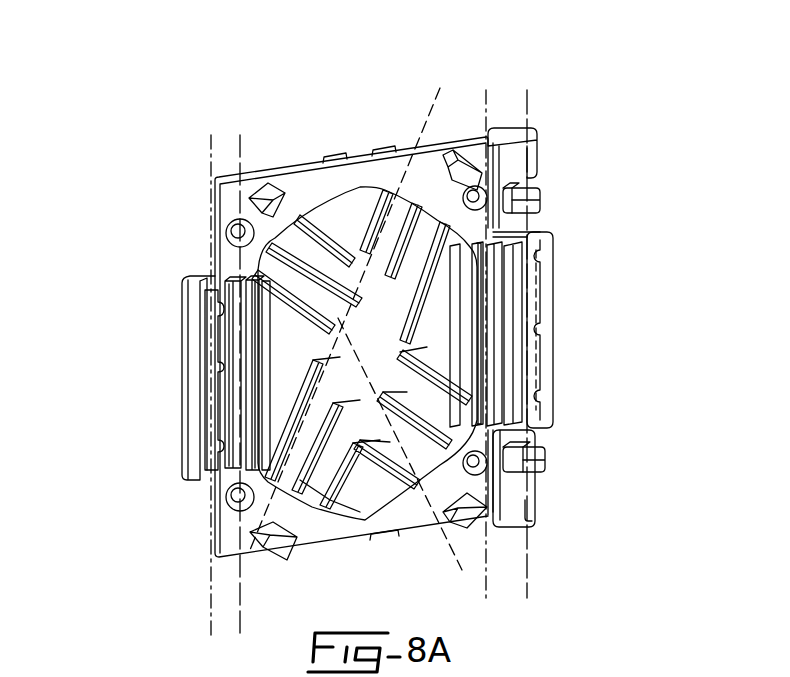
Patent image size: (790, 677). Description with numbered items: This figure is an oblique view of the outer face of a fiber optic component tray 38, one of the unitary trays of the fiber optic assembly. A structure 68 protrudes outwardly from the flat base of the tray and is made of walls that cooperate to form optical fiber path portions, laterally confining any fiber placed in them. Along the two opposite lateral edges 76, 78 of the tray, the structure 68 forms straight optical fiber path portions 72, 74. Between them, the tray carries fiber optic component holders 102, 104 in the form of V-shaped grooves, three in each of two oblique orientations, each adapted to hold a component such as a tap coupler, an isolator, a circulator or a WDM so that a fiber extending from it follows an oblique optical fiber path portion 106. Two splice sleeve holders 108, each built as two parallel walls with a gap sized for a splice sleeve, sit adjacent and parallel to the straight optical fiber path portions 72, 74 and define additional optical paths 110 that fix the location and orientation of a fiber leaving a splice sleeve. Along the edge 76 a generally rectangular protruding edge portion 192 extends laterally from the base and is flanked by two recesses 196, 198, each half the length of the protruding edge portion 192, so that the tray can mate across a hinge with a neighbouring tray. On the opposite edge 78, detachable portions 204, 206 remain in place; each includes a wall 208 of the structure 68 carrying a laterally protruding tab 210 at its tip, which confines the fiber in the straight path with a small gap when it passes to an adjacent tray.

The fiber optic component tray 38 is at (582, 128).
The structure 68 is at (470, 173).
The straight optical fiber path portion 72 is at (212, 602).
The straight optical fiber path portion 74 is at (527, 563).
The lateral edge 76 is at (187, 372).
The lateral edge 78 is at (542, 229).
The fiber optic component holder 102 is at (360, 212).
The fiber optic component holder 104 is at (343, 508).
The oblique optical fiber path portion 106 is at (273, 168).
The splice sleeve holder 108 is at (250, 408).
The optical path 110 is at (213, 389).
The protruding edge portion 192 is at (188, 322).
The recess 196 is at (168, 192).
The recess 198 is at (180, 485).
The detachable portion 204 is at (510, 495).
The detachable portion 206 is at (530, 147).
The wall 208 is at (505, 197).
The tab 210 is at (538, 203).